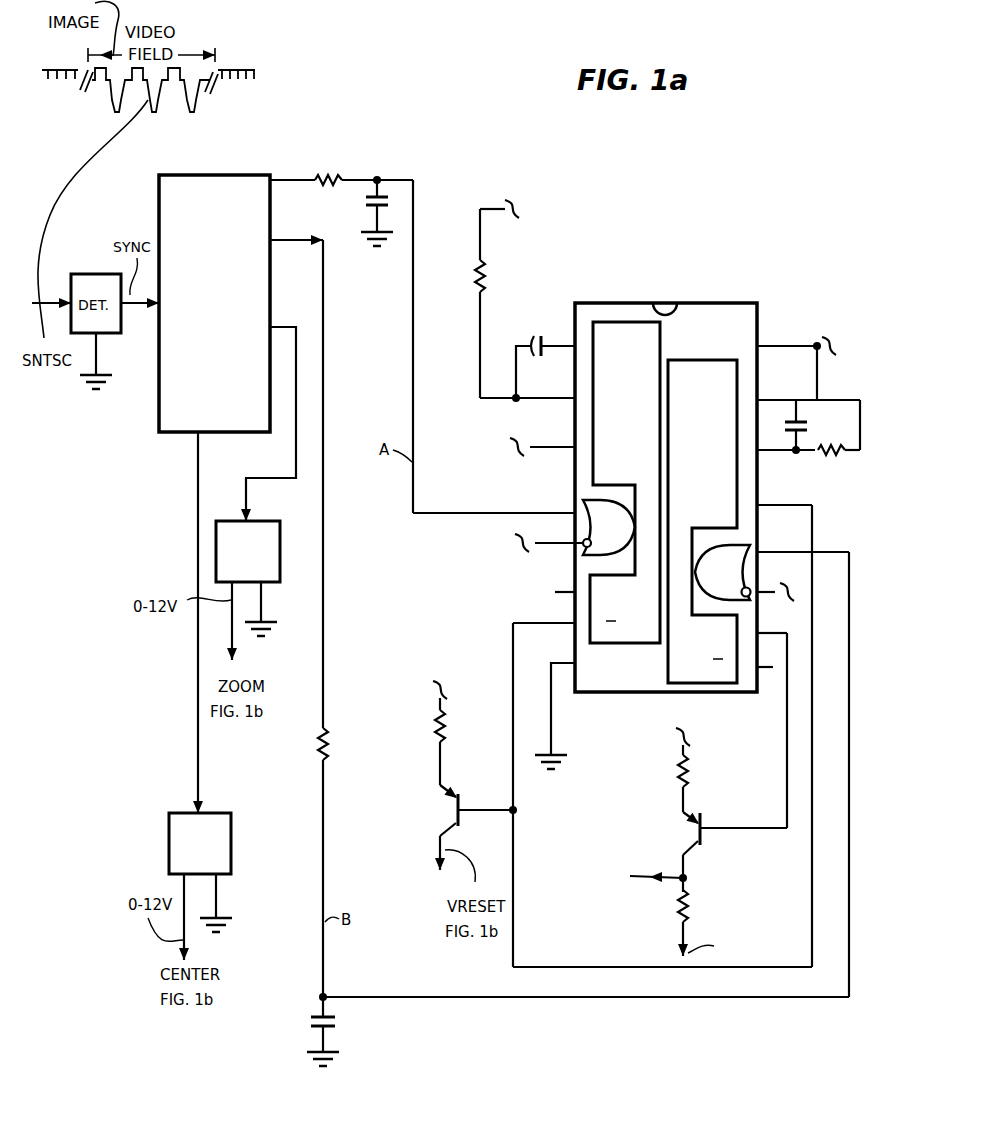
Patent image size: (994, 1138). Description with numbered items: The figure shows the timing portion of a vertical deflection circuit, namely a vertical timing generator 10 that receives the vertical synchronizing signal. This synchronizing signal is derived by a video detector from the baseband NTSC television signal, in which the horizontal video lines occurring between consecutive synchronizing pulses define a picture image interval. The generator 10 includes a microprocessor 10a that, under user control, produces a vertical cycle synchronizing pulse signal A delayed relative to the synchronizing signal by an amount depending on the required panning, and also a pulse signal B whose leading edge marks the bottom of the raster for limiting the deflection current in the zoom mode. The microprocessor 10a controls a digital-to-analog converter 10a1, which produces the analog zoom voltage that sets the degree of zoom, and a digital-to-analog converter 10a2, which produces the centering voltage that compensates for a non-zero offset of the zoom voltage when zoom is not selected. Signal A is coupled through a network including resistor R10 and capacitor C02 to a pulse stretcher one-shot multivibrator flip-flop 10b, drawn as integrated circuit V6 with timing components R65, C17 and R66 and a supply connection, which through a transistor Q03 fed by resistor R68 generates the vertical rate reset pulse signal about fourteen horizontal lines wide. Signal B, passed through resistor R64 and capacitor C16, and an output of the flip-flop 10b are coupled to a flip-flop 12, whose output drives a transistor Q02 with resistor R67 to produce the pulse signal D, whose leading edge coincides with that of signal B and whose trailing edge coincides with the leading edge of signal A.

The vertical timing generator 10 is at (400, 584).
The microprocessor 10a is at (182, 175).
The digital-to-analog converter 10a1 is at (280, 538).
The digital-to-analog converter 10a2 is at (231, 828).
The pulse stretcher one-shot or multivibrator flip-flop 10b is at (672, 519).
The flip-flop 12 is at (747, 643).
The integrated circuit MC14538B V6 is at (667, 480).
The resistor 4.7K R10 is at (341, 161).
The capacitor 4700PF C02 is at (350, 211).
The resistor 90.9K R65 is at (525, 301).
The capacitor .01 C17 is at (537, 358).
The resistor 100K R66 is at (836, 469).
The resistor 4.7K R64 is at (345, 743).
The capacitor 4700PF C16 is at (354, 1029).
The resistor 4.7K R68 is at (461, 728).
The transistor Q03 is at (465, 766).
The resistor 10K R67 is at (666, 777).
The transistor Q02 is at (689, 833).